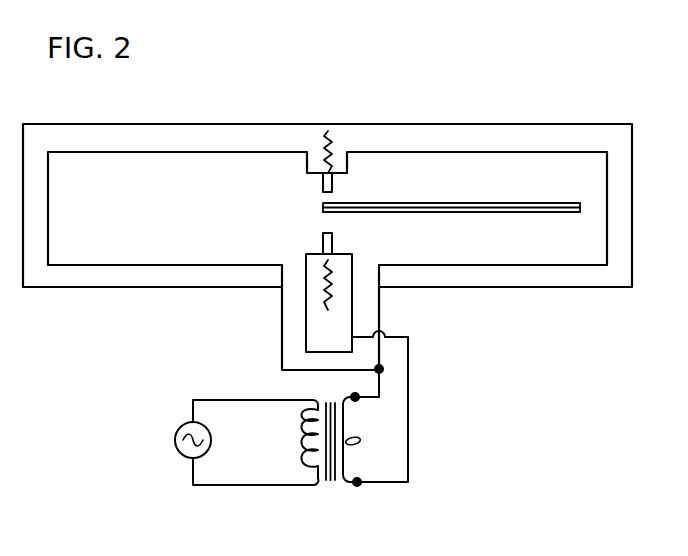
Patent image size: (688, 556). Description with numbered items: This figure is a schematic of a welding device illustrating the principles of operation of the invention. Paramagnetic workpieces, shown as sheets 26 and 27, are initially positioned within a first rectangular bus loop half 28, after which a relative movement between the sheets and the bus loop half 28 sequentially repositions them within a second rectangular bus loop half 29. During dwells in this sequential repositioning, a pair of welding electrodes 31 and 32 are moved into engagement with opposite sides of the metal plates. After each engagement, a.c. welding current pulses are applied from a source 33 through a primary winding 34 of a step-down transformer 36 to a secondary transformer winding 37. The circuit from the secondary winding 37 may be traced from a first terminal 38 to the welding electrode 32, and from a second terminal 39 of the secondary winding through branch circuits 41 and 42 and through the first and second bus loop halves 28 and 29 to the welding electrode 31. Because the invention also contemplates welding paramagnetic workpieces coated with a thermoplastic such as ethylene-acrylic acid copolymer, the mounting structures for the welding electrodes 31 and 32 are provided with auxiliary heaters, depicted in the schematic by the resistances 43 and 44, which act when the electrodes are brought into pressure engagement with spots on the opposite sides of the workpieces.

The sheet 26 is at (437, 203).
The sheet 27 is at (481, 212).
The first rectangular bus loop half 28 is at (485, 124).
The second rectangular bus loop half 29 is at (147, 126).
The welding electrode 31 is at (322, 190).
The welding electrode 32 is at (322, 236).
The source 33 is at (175, 441).
The primary winding 34 is at (302, 450).
The step-down transformer 36 is at (327, 492).
The secondary transformer winding 37 is at (360, 440).
The first terminal 38 is at (359, 485).
The second terminal 39 is at (352, 396).
The branch circuit 41 is at (380, 320).
The branch circuit 42 is at (283, 316).
The resistance 43 is at (334, 159).
The resistance 44 is at (331, 272).